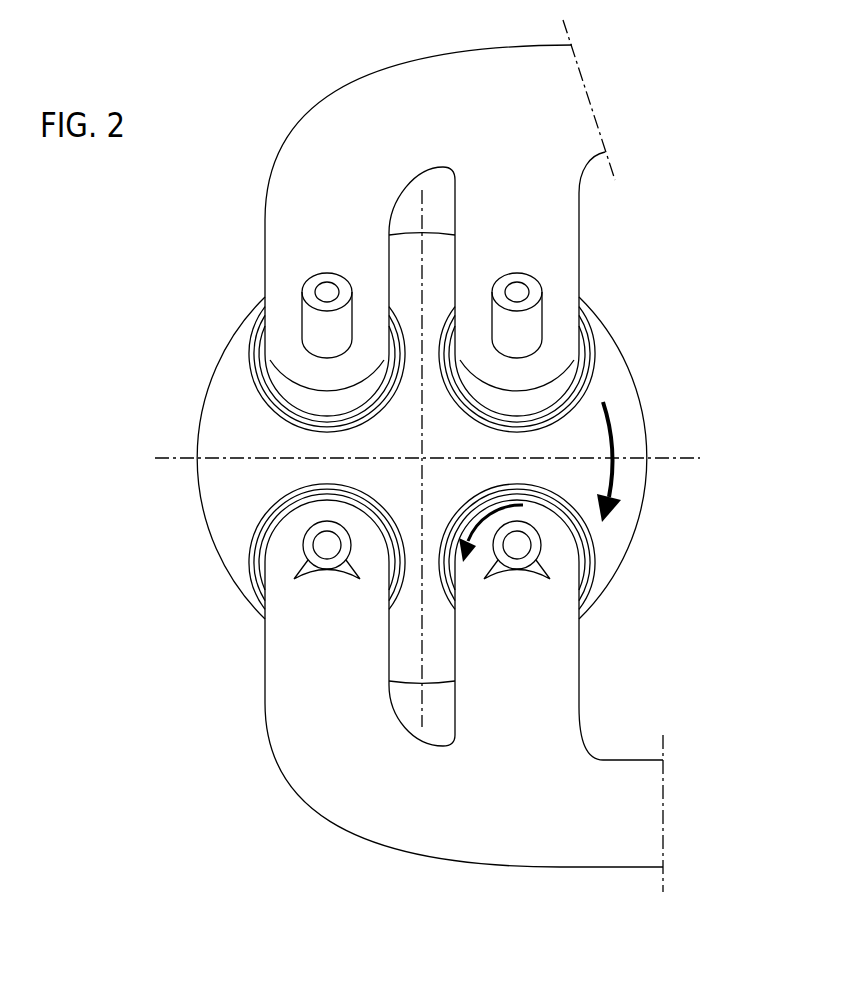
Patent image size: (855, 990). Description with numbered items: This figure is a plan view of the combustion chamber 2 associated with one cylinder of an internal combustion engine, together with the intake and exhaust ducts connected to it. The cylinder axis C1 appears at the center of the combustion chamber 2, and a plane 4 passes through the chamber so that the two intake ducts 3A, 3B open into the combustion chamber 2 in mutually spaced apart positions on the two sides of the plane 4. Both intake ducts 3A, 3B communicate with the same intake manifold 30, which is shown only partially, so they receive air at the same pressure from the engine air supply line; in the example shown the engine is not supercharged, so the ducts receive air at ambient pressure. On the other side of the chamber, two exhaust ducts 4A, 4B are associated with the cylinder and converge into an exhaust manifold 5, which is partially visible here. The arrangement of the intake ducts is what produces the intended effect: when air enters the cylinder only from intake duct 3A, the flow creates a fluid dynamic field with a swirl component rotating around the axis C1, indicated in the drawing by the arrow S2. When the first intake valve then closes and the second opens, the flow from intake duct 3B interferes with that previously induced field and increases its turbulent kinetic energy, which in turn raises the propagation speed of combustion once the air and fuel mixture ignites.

The combustion chamber 2 is at (232, 432).
The intake duct 3A is at (292, 673).
The intake duct 3B is at (540, 688).
The plane 4 is at (423, 643).
The exhaust duct 4A is at (282, 232).
The exhaust duct 4B is at (565, 226).
The exhaust manifold 5 is at (552, 100).
The intake manifold 30 is at (637, 817).
The axis C1 is at (422, 462).
The rotation direction S2 is at (610, 435).